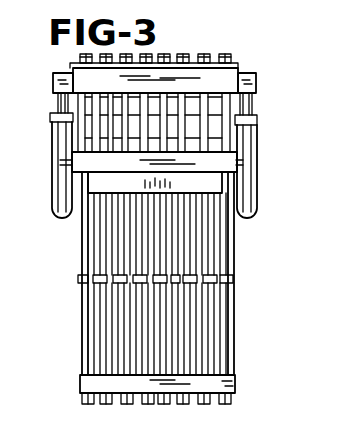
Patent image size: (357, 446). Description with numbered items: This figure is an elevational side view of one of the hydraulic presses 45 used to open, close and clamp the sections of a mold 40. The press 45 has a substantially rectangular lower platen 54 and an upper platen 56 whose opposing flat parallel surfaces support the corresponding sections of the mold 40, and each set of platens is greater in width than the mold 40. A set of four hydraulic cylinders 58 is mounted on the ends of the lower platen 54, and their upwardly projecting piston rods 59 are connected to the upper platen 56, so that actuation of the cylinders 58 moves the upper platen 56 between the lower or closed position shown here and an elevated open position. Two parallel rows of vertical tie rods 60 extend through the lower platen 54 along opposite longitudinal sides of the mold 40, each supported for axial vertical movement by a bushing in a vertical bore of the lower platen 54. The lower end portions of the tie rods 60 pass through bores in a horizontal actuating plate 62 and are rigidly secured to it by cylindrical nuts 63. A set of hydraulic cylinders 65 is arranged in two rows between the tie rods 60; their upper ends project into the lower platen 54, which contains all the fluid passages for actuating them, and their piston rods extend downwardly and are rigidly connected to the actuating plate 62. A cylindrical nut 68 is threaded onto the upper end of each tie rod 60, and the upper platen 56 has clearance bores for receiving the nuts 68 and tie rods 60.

The mold 40 is at (216, 116).
The press 45 is at (242, 55).
The lower platen 54 is at (88, 167).
The upper platen 56 is at (225, 80).
The hydraulic cylinders 58 is at (56, 142).
The piston rods 59 is at (56, 100).
The tie rods 60 is at (125, 327).
The actuating plate 62 is at (82, 383).
The cylindrical nuts 63 is at (121, 405).
The hydraulic cylinders 65 is at (98, 252).
The cylindrical nut 68 is at (221, 56).